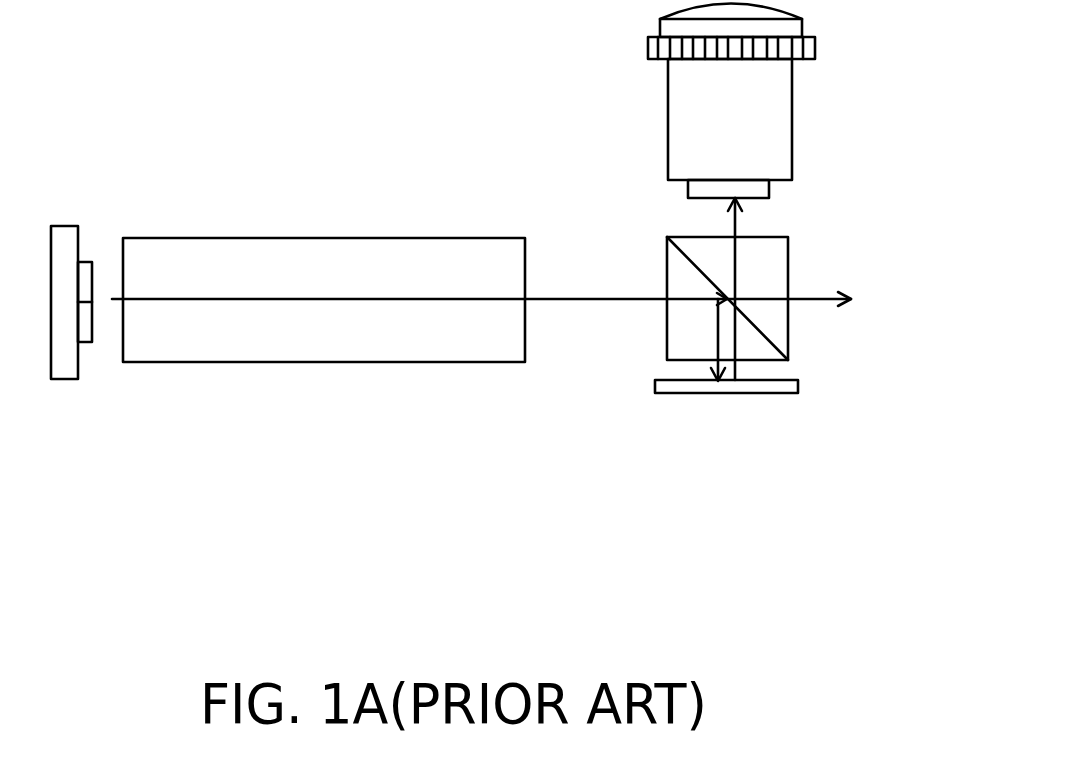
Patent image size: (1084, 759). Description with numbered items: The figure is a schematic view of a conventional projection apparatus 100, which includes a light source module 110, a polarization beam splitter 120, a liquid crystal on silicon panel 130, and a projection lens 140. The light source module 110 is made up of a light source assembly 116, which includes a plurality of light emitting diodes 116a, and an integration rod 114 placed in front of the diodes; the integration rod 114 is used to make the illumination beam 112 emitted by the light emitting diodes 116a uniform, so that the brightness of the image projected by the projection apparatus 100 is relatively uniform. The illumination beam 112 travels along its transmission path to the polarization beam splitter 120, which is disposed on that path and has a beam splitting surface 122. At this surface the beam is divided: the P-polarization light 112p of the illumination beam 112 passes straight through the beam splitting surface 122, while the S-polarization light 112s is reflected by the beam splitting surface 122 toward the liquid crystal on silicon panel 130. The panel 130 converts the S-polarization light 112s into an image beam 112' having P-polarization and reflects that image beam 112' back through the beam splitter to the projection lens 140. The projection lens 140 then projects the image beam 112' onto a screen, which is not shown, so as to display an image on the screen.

The projection apparatus 100 is at (850, 600).
The light source module 110 is at (210, 502).
The illumination beam 112 is at (450, 356).
The P-polarization light 112p is at (803, 294).
The S-polarization light 112s is at (722, 325).
The image beam 112' is at (806, 294).
The integration rod 114 is at (181, 347).
The light source assembly 116 is at (61, 389).
The light emitting diodes 116a is at (90, 265).
The polarization beam splitter 120 is at (764, 243).
The beam splitting surface 122 is at (757, 325).
The liquid crystal on silicon panel 130 is at (723, 387).
The projection lens 140 is at (765, 112).